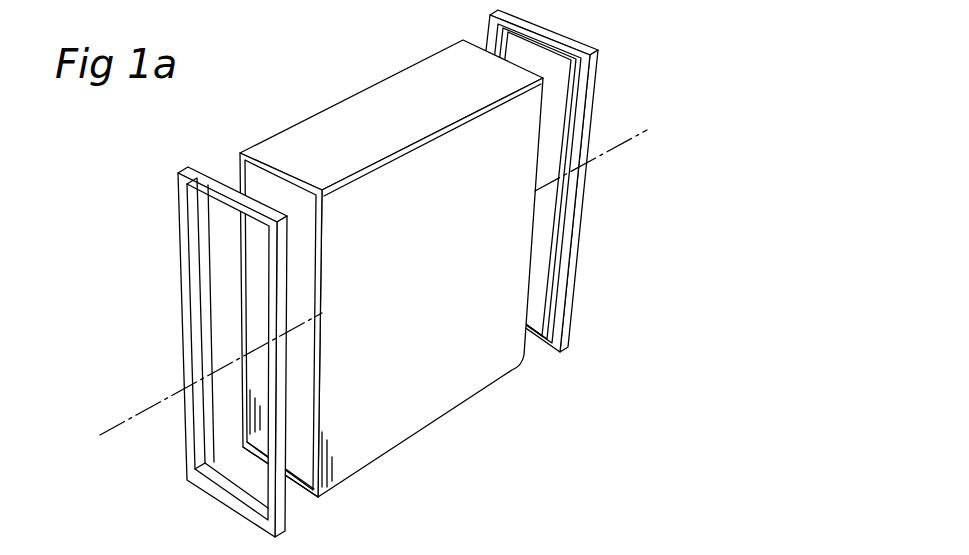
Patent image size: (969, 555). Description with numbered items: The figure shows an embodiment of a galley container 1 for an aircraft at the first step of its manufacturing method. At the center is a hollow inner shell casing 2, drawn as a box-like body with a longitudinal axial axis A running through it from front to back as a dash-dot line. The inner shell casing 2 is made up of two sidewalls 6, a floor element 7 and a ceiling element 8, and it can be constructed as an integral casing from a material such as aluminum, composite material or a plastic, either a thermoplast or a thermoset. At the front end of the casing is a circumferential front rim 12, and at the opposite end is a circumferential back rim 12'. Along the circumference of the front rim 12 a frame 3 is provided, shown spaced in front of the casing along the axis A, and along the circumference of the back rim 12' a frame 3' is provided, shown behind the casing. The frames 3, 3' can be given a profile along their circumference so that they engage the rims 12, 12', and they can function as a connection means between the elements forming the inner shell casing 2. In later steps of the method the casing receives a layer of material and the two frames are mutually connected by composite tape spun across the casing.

The galley container 1 is at (310, 62).
The hollow inner shell casing 2 is at (448, 76).
The frame 3 is at (226, 328).
The frame 3' is at (554, 180).
The sidewall 6 is at (443, 361).
The floor element 7 is at (300, 452).
The ceiling element 8 is at (394, 113).
The front rim 12 is at (278, 289).
The back rim 12' is at (539, 174).
The longitudinal axial axis A is at (634, 134).